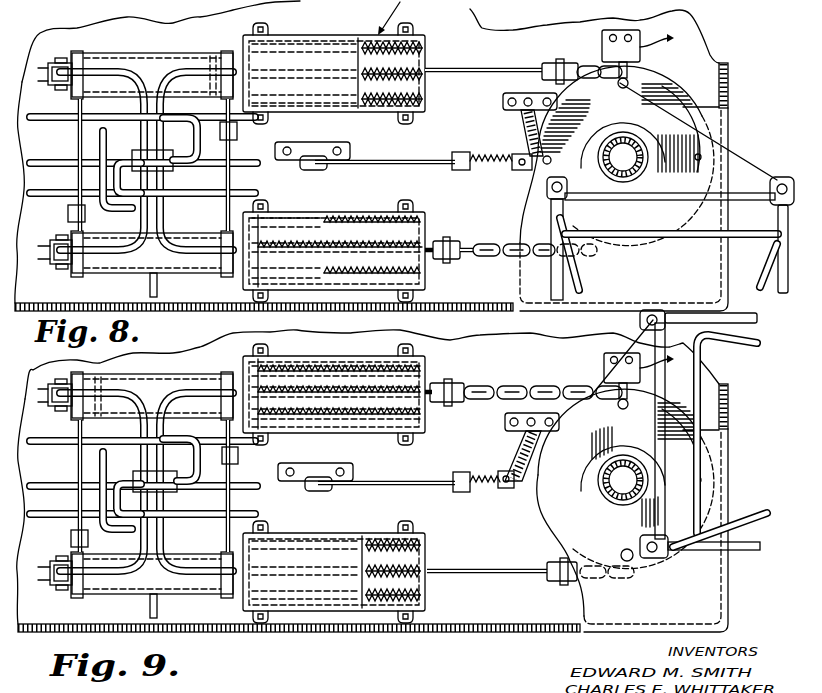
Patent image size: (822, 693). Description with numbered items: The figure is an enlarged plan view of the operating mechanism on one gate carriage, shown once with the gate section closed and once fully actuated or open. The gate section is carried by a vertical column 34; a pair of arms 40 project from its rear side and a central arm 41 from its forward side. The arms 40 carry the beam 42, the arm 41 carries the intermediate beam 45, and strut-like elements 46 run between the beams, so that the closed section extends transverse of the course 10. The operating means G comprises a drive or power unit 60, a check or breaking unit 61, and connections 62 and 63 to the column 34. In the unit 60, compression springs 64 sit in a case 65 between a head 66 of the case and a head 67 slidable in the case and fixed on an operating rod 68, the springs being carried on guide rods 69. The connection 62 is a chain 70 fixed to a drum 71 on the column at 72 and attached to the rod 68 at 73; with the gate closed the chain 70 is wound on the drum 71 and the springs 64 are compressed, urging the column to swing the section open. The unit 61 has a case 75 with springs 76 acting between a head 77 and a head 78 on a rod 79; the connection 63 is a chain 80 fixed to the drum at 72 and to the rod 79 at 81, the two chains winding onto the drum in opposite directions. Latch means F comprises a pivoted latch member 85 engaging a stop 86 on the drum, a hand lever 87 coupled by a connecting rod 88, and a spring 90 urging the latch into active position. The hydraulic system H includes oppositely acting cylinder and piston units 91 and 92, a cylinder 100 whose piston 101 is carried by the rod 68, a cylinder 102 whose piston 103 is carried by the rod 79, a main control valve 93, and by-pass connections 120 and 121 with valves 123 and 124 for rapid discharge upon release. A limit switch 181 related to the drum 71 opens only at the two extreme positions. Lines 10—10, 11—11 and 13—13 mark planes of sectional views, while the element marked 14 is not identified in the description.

In FIG. 8, the course 10 is at (487, 168).
In FIG. 9, the section line 11— 11 is at (391, 570).
In FIG. 9, the section line 13— 13 is at (424, 501).
In FIG. 8, the base plate 14 is at (478, 34).
In FIG. 9, the base plate 14 is at (299, 631).
In FIG. 8, the column 34 is at (652, 148).
In FIG. 9, the column 34 is at (623, 463).
In FIG. 8, the arms 40 is at (587, 182).
In FIG. 9, the arms 40 is at (660, 434).
In FIG. 8, the central arm 41 is at (679, 144).
In FIG. 9, the central arm 41 is at (673, 355).
In FIG. 8, the beam 42 is at (575, 268).
In FIG. 9, the beam 42 is at (726, 542).
In FIG. 8, the intermediate beam 45 is at (760, 276).
In FIG. 9, the intermediate beam 45 is at (742, 434).
In FIG. 8, the strut-like elements 46 is at (656, 248).
In FIG. 9, the strut-like elements 46 is at (650, 530).
In FIG. 8, the drive or power unit 60 is at (298, 36).
In FIG. 8, the check or breaking unit 61 is at (339, 212).
In FIG. 9, the check or breaking unit 61 is at (396, 548).
In FIG. 8, the operating connection 62 is at (568, 64).
In FIG. 9, the operating connection 62 is at (526, 376).
In FIG. 8, the connection 63 is at (455, 248).
In FIG. 9, the connection 63 is at (538, 582).
In FIG. 8, the compression springs 64 is at (408, 48).
In FIG. 9, the compression springs 64 is at (339, 375).
In FIG. 8, the case 65 is at (300, 112).
In FIG. 9, the case 65 is at (334, 392).
In FIG. 8, the head 66 is at (425, 98).
In FIG. 8, the head 67 is at (358, 60).
In FIG. 9, the head 67 is at (239, 387).
In FIG. 8, the operating rod 68 is at (476, 68).
In FIG. 9, the operating rod 68 is at (445, 373).
In FIG. 8, the guide rods 69 is at (318, 50).
In FIG. 9, the guide rods 69 is at (336, 377).
In FIG. 8, the chain 70 is at (662, 70).
In FIG. 9, the chain 70 is at (616, 425).
In FIG. 8, the drum 71 is at (700, 100).
In FIG. 9, the drum 71 is at (730, 406).
In FIG. 8, the chain attachment point 72 is at (680, 222).
In FIG. 9, the chain attachment point 72 is at (628, 478).
In FIG. 8, the chain-to-rod connection 73 is at (523, 117).
In FIG. 9, the chain-to-rod connection 73 is at (514, 445).
In FIG. 8, the case 75 is at (371, 216).
In FIG. 9, the case 75 is at (306, 601).
In FIG. 8, the springs 76 is at (386, 230).
In FIG. 9, the springs 76 is at (384, 516).
In FIG. 8, the head 77 is at (427, 282).
In FIG. 9, the head 77 is at (344, 568).
In FIG. 8, the head 78 is at (262, 245).
In FIG. 9, the head 78 is at (356, 560).
In FIG. 8, the rod 79 is at (233, 273).
In FIG. 9, the rod 79 is at (487, 554).
In FIG. 8, the chain 80 is at (517, 262).
In FIG. 9, the chain 80 is at (615, 588).
In FIG. 8, the chain-to-rod connection 81 is at (468, 260).
In FIG. 9, the chain-to-rod connection 81 is at (569, 600).
In FIG. 8, the pivoted latch member 85 is at (518, 154).
In FIG. 9, the pivoted latch member 85 is at (499, 464).
In FIG. 8, the stop 86 is at (562, 152).
In FIG. 9, the stop 86 is at (612, 546).
In FIG. 8, the pivoted hand lever 87 is at (305, 166).
In FIG. 9, the pivoted hand lever 87 is at (315, 491).
In FIG. 8, the connecting rod 88 is at (395, 163).
In FIG. 9, the connecting rod 88 is at (386, 471).
In FIG. 8, the spring 90 is at (476, 153).
In FIG. 9, the spring 90 is at (473, 468).
In FIG. 8, the cylinder and piston unit 91 is at (148, 54).
In FIG. 9, the cylinder and piston unit 91 is at (154, 469).
In FIG. 8, the cylinder and piston unit 92 is at (175, 275).
In FIG. 9, the cylinder and piston unit 92 is at (117, 609).
In FIG. 8, the main control valve 93 is at (175, 153).
In FIG. 9, the main control valve 93 is at (173, 460).
In FIG. 8, the cylinder 100 is at (125, 55).
In FIG. 9, the cylinder 100 is at (152, 385).
In FIG. 8, the piston 101 is at (200, 62).
In FIG. 9, the piston 101 is at (101, 387).
In FIG. 8, the cylinder 102 is at (95, 282).
In FIG. 9, the cylinder 102 is at (124, 590).
In FIG. 8, the piston 103 is at (100, 262).
In FIG. 9, the piston 103 is at (152, 574).
In FIG. 9, the by-passing connection 120 is at (142, 456).
In FIG. 9, the by-pass connection 121 is at (143, 500).
In FIG. 9, the valve 123 is at (63, 543).
In FIG. 9, the valve 124 is at (274, 452).
In FIG. 8, the limit switch 181 is at (640, 36).
In FIG. 9, the limit switch 181 is at (642, 374).
In FIG. 8, the mechanical latch means F is at (466, 151).
In FIG. 9, the mechanical latch means F is at (479, 510).
In FIG. 9, the operating means G is at (324, 652).
In FIG. 8, the hydraulic system H is at (69, 199).
In FIG. 9, the hydraulic system H is at (56, 516).